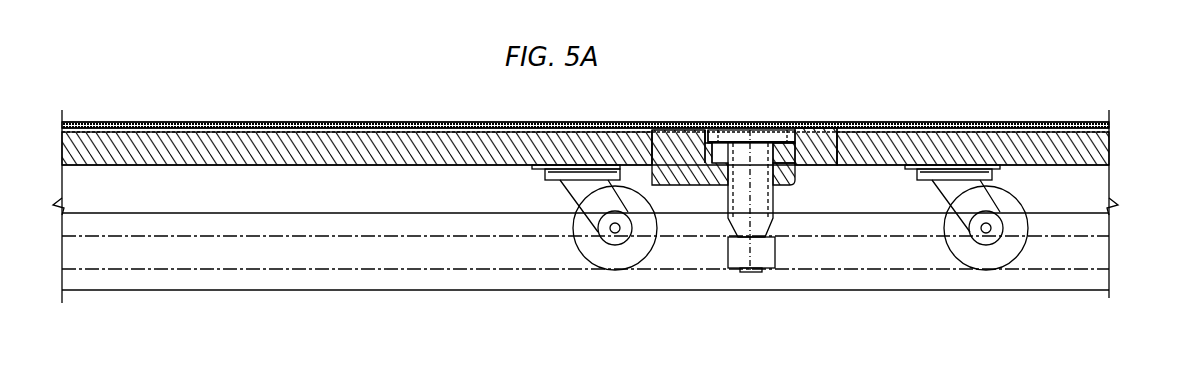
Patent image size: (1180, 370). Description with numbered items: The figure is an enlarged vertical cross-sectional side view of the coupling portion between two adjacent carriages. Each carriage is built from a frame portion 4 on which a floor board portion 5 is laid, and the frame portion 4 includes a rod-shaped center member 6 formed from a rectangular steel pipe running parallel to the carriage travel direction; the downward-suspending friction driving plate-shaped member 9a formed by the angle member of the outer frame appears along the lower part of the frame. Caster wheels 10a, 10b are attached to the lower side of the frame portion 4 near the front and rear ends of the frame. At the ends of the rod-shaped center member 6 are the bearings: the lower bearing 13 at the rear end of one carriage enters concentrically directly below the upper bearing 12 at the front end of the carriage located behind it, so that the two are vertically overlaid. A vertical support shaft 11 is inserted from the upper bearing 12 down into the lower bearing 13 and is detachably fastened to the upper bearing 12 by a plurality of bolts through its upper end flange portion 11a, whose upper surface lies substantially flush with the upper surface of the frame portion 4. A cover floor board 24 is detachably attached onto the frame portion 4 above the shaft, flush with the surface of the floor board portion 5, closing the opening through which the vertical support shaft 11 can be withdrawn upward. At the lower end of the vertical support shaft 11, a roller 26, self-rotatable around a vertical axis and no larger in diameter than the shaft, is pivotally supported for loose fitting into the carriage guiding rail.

The frame portion 4 is at (417, 123).
The floor board portion 5 is at (240, 122).
The rod-shaped center member 6 is at (370, 158).
The friction driving plate-shaped member 9a is at (295, 199).
The caster wheel 10a is at (989, 257).
The caster wheel 10b is at (610, 257).
The vertical support shaft 11 is at (765, 205).
The upper end flange portion 11a is at (728, 132).
The upper bearing 12 is at (702, 160).
The lower bearing 13 is at (795, 177).
The cover floor board 24 is at (772, 124).
The roller 26 is at (752, 258).